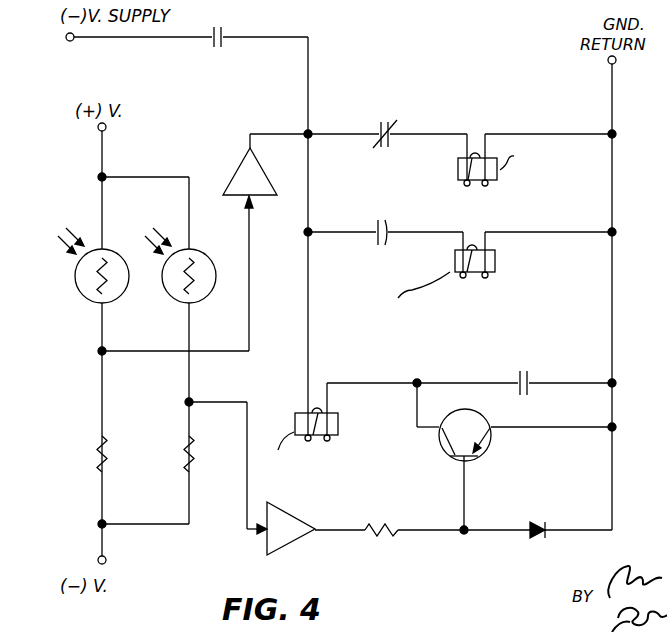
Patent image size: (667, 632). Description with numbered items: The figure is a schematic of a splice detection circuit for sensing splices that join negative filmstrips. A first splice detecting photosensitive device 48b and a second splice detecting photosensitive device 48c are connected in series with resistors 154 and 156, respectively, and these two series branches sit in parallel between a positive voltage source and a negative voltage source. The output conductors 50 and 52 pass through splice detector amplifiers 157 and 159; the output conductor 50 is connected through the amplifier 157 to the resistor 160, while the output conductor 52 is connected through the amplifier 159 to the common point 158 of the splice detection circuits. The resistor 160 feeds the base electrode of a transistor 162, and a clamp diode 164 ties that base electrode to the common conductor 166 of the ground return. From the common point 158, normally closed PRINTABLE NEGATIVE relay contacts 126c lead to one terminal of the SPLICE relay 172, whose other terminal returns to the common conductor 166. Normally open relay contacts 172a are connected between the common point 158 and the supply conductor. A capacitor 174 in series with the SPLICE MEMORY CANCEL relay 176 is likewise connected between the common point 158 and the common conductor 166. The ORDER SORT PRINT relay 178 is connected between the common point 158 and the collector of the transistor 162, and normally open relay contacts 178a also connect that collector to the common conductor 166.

The normally open relay contacts 172a is at (228, 32).
The common point 158 is at (310, 131).
The normally closed PRINTABLE NEGATIVE relay contacts 126c is at (395, 117).
The SPLICE relay 172 is at (456, 167).
The capacitor 174 is at (370, 222).
The SPLICE MEMORY CANCEL relay 176 is at (455, 260).
The common conductor 166 is at (612, 408).
The ORDER SORT PRINT relay 178 is at (333, 410).
The normally open relay contacts 178a is at (530, 379).
The transistor 162 is at (476, 465).
The resistor 160 is at (394, 522).
The clamp diode 164 is at (548, 522).
The splice detector amplifier 159 is at (226, 160).
The splice detector amplifier 157 is at (266, 542).
The second splice detecting photosensitive device 48c is at (86, 300).
The first splice detecting photosensitive device 48b is at (198, 250).
The resistor 156 is at (96, 455).
The resistor 154 is at (184, 462).
The output conductor 52 is at (249, 300).
The output conductor 50 is at (247, 515).